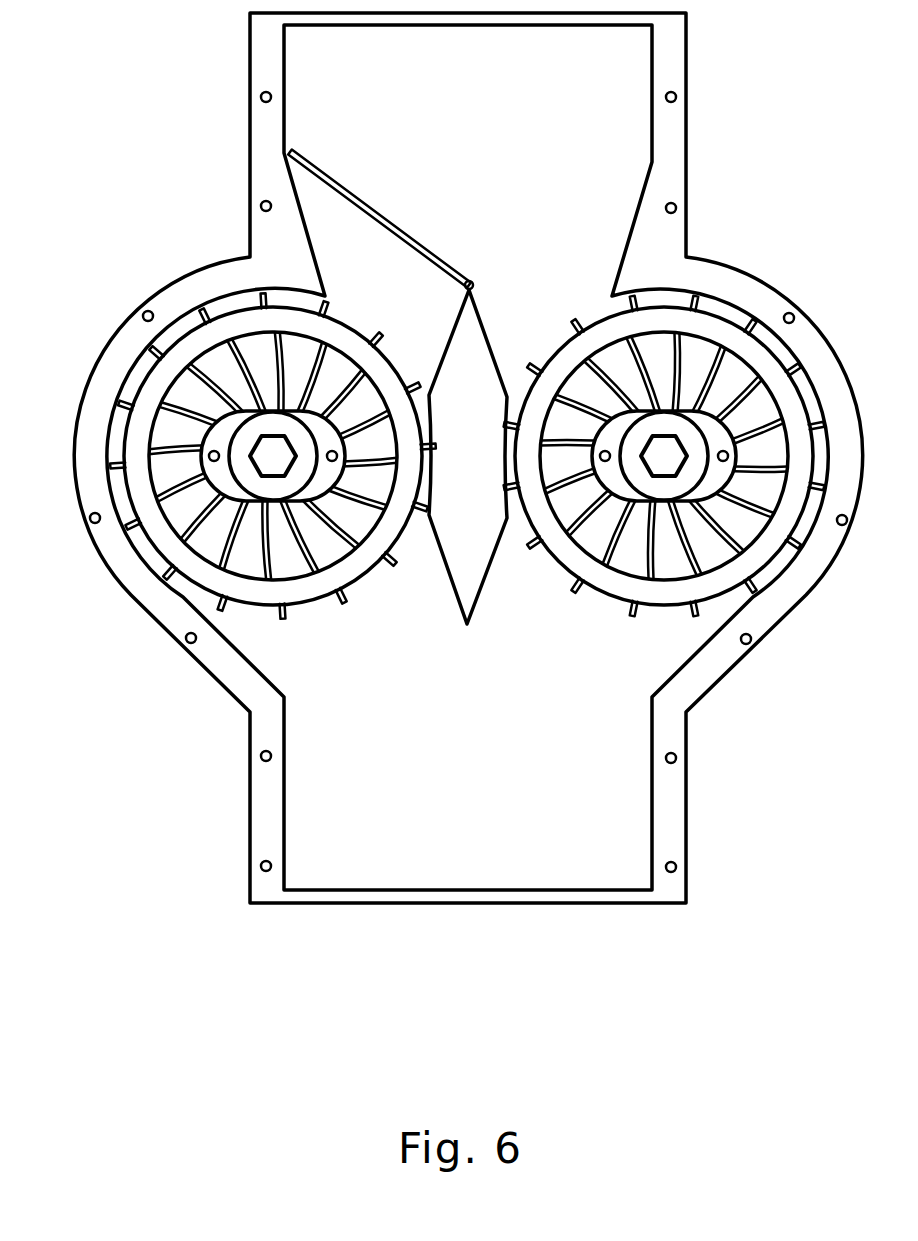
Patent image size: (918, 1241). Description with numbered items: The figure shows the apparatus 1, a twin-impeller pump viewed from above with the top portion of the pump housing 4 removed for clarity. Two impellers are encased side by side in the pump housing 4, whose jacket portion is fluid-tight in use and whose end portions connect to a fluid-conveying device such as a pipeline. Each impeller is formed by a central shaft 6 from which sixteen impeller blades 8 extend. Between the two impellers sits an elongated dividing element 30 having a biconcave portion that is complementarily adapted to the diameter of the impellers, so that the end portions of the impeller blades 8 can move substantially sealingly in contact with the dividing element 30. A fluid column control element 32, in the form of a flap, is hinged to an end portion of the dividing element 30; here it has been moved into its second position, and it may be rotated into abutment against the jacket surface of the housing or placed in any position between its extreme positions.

The apparatus 1 is at (245, 1017).
The pump housing 4 is at (245, 803).
The central shaft 6 is at (654, 453).
The impeller blades 8 is at (207, 592).
The dividing element 30 is at (485, 584).
The fluid column control element 32 is at (340, 185).